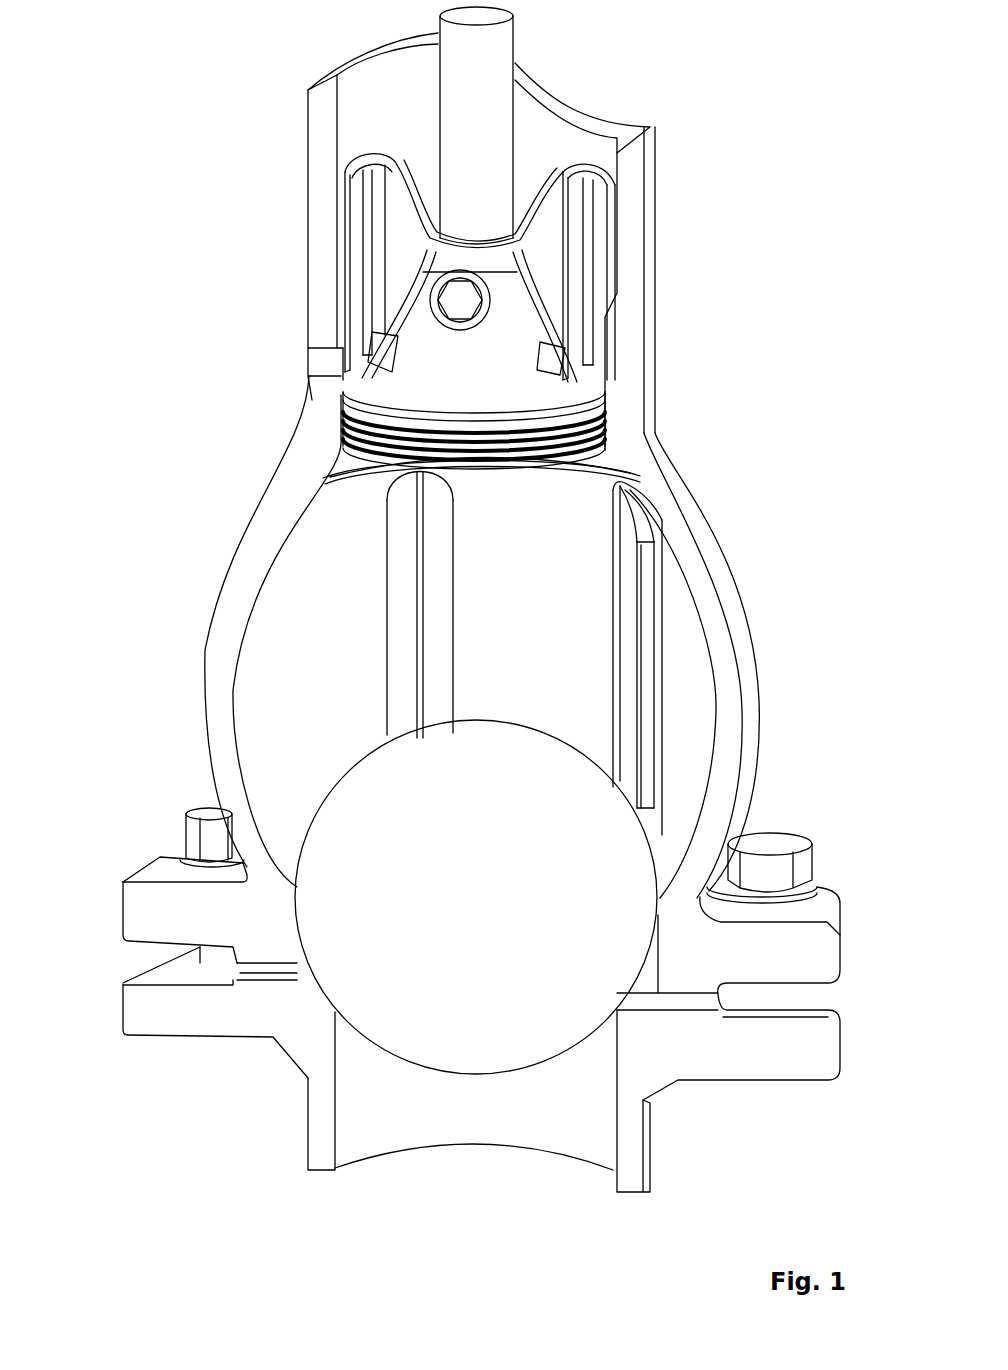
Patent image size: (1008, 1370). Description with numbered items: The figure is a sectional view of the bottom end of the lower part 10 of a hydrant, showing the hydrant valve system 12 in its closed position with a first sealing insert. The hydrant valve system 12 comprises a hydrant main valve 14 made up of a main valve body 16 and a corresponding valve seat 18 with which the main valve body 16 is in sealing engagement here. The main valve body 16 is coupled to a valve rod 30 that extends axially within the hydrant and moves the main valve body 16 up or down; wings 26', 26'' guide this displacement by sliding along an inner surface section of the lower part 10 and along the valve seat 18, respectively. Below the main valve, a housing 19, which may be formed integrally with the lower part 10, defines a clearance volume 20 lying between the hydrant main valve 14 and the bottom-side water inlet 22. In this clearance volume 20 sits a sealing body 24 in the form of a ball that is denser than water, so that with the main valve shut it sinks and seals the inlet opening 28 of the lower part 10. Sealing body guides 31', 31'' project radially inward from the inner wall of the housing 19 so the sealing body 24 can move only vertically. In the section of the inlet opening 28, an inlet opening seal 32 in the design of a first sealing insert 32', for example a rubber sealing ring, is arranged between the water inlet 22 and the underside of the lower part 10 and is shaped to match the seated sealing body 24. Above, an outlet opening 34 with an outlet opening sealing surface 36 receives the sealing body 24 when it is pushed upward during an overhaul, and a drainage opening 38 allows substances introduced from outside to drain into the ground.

The lower part 10 is at (481, 241).
The hydrant valve system 12 is at (340, 631).
The hydrant main valve 14 is at (680, 392).
The main valve body 16 is at (469, 271).
The valve seat 18 is at (608, 408).
The housing 19 is at (763, 612).
The clearance volume 20 is at (503, 677).
The bottom-side water inlet 22 is at (677, 1054).
The sealing body 24 is at (476, 897).
The wing 26' is at (296, 251).
The wing 26'' is at (662, 264).
The inlet opening 28 is at (477, 1083).
The valve rod 30 is at (476, 125).
The sealing body guide 31' is at (372, 605).
The sealing body guide 31'' is at (583, 658).
The inlet opening seal 32 is at (188, 974).
The first sealing insert 32' is at (246, 1052).
The outlet opening 34 is at (460, 463).
The outlet opening sealing surface 36 is at (343, 444).
The drainage opening 38 is at (290, 346).